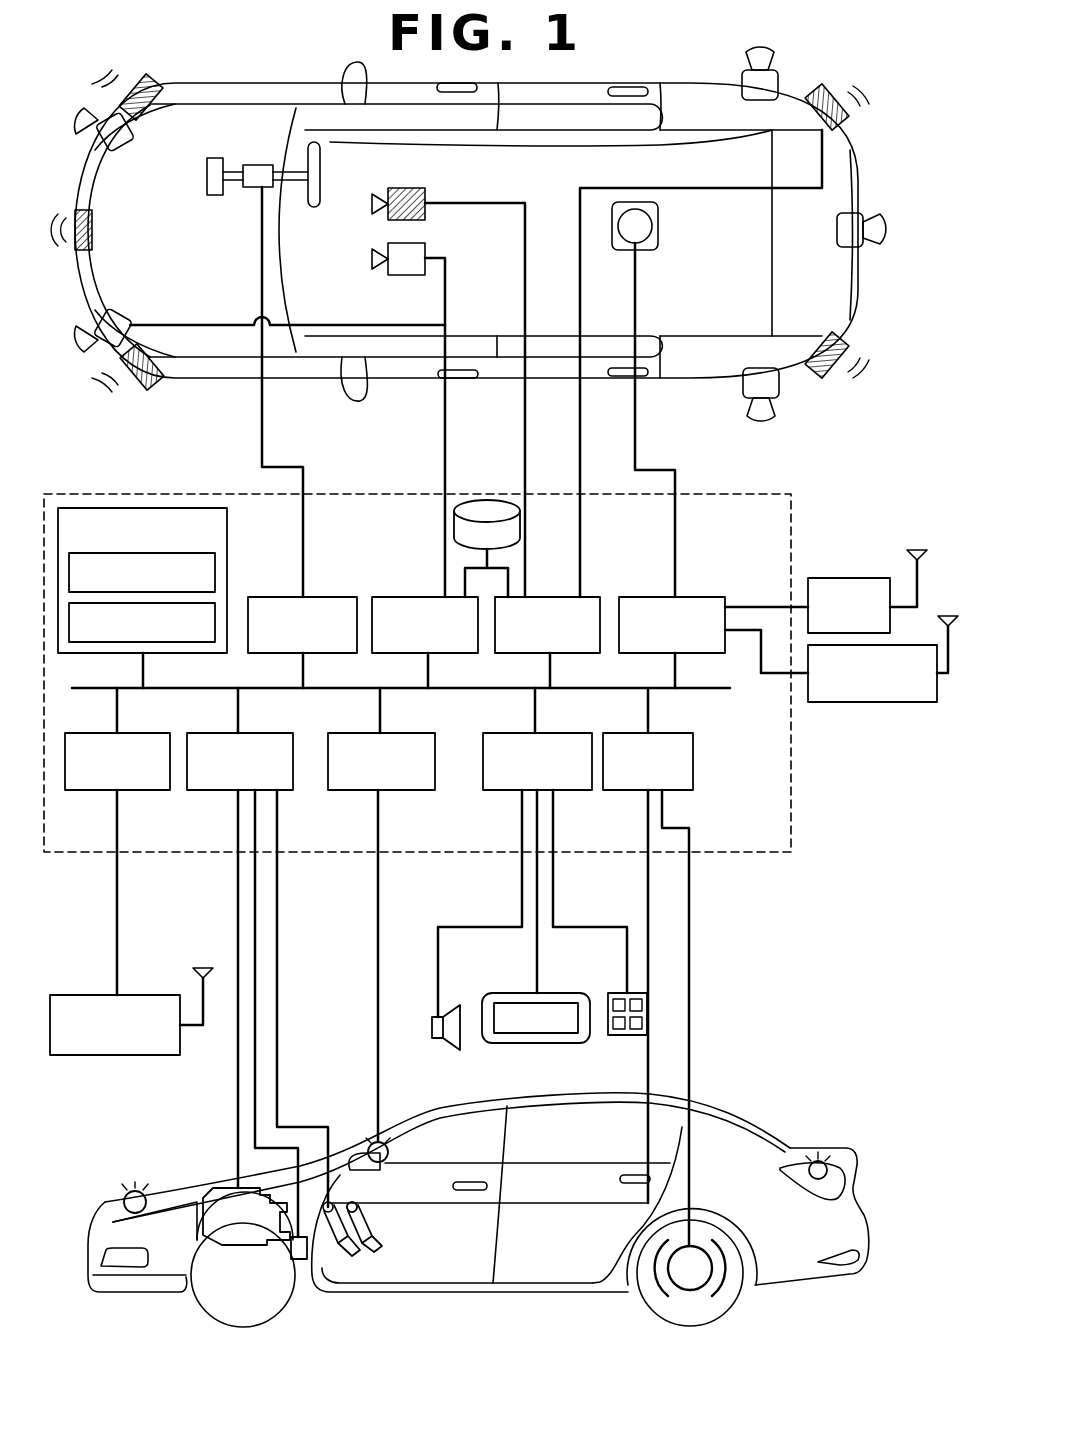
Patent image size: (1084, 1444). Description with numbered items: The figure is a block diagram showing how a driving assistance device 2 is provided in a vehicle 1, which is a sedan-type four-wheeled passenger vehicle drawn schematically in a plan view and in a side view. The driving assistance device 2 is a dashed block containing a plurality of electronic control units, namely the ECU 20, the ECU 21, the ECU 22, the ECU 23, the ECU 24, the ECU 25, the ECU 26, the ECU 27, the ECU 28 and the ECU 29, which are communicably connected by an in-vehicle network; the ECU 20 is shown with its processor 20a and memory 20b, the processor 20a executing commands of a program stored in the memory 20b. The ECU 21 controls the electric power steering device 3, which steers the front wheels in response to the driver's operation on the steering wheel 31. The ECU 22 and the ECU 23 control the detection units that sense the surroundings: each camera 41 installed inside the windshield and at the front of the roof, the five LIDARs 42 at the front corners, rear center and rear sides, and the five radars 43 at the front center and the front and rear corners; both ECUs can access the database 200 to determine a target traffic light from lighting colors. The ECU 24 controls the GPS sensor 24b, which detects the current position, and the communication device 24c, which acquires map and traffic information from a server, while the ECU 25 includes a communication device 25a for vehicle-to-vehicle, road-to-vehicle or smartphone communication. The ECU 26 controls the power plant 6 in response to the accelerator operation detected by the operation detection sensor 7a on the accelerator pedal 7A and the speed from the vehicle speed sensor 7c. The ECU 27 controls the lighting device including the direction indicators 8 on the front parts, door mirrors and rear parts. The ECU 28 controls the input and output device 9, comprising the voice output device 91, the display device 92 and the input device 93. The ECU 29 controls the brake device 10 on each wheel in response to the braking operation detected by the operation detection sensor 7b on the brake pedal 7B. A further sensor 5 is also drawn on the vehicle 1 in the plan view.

The vehicle 1 is at (877, 132).
The driving assistance device 2 is at (788, 852).
The electric power steering device 3 is at (214, 196).
The steering wheel 31 is at (314, 208).
The camera 41 is at (425, 210).
The LIDAR 42 is at (129, 154).
The radar 43 is at (140, 120).
The rotation sensor 5 is at (660, 226).
The power plant 6 is at (209, 1186).
The operation detection sensor 7a is at (330, 1206).
The accelerator pedal 7A is at (356, 1253).
The brake pedal 7B is at (382, 1228).
The operation detection sensor 7b is at (360, 1204).
The vehicle speed sensor 7c is at (299, 1260).
The direction indicator 8 is at (126, 1198).
The input and output device 9 is at (517, 947).
The voice output device 91 is at (432, 1030).
The display device 92 is at (510, 993).
The input device 93 is at (618, 993).
The brake device 10 is at (693, 1290).
The ECU 20 is at (175, 569).
The processor 20a is at (215, 572).
The memory 20b is at (215, 622).
The ECU 21 is at (336, 596).
The ECU 22 is at (426, 596).
The ECU 23 is at (554, 596).
The ECU 24 is at (620, 596).
The GPS sensor 24b is at (864, 576).
The communication device 24c is at (860, 704).
The ECU 25 is at (146, 790).
The communication device 25a is at (122, 1056).
The ECU 26 is at (220, 790).
The ECU 27 is at (405, 790).
The ECU 28 is at (500, 790).
The ECU 29 is at (622, 790).
The database 200 is at (491, 496).